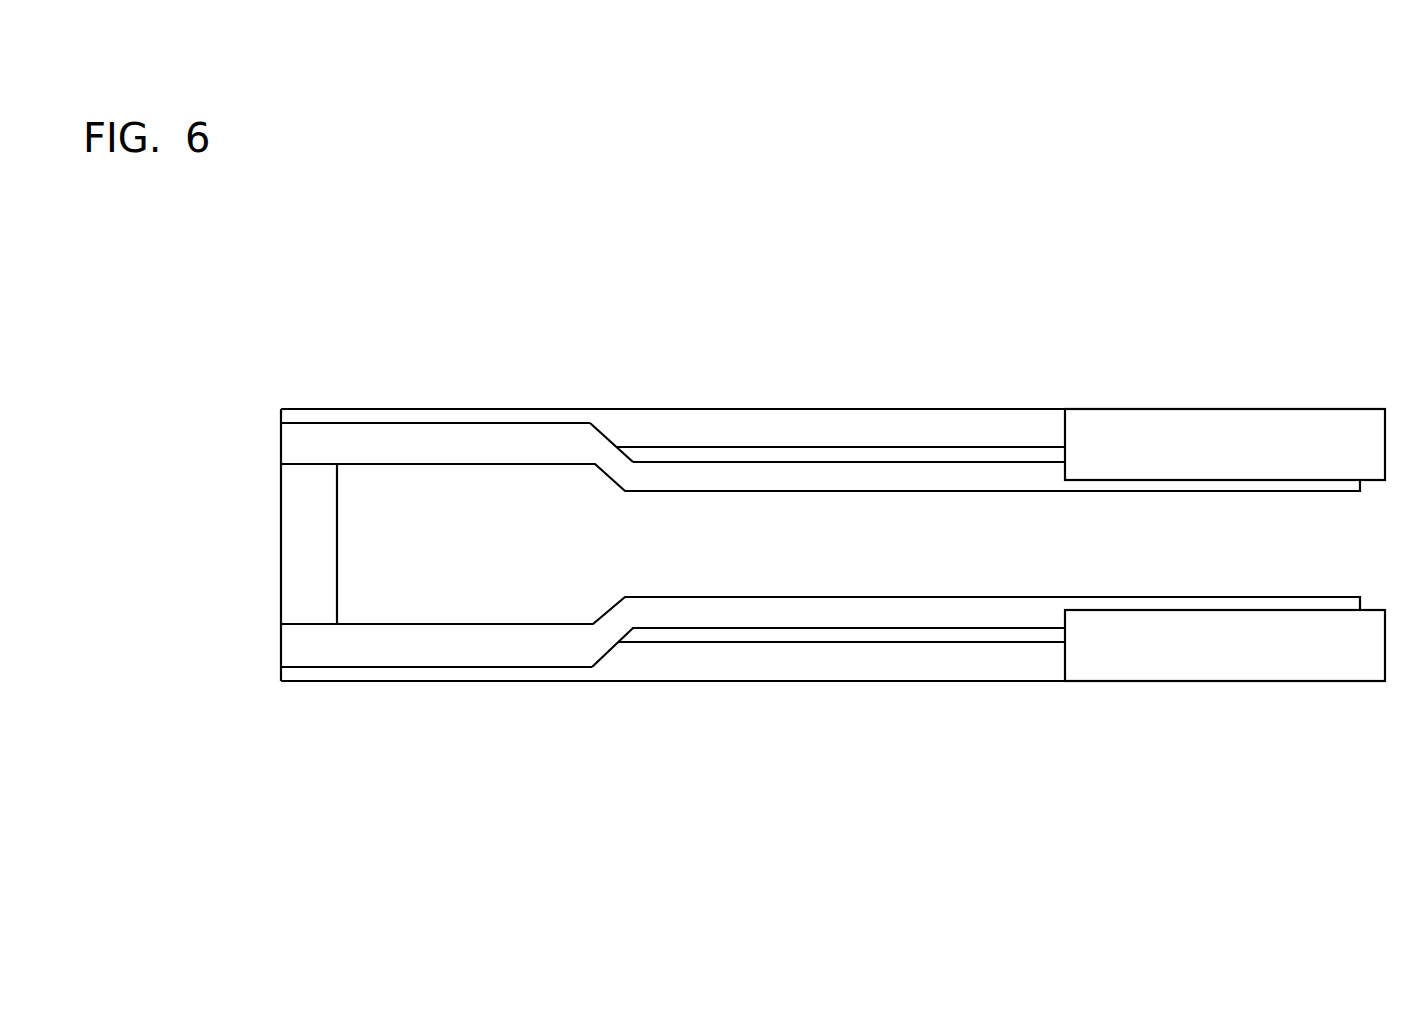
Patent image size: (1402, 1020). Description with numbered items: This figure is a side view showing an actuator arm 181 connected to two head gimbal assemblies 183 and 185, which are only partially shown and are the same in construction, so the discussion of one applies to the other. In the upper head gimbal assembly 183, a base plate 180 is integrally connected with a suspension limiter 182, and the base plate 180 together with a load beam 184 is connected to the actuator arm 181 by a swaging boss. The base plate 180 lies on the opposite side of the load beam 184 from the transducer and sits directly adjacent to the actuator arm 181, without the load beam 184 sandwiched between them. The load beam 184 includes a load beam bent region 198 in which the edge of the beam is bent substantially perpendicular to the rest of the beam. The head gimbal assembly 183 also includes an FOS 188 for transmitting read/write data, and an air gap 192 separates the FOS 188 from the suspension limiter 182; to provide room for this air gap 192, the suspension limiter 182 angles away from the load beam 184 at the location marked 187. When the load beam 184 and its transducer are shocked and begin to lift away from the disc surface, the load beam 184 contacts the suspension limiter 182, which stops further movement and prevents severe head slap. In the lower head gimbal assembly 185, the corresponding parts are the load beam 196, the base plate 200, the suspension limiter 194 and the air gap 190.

The base plate 180 is at (318, 443).
The actuator arm 181 is at (325, 566).
The suspension limiter 182 is at (954, 469).
The head gimbal assembly 183 is at (460, 467).
The load beam 184 is at (440, 412).
The head gimbal assembly 185 is at (479, 621).
The location 187 is at (613, 455).
The FOS 188 is at (740, 440).
The air gap 190 is at (839, 621).
The air gap 192 is at (842, 449).
The suspension limiter 194 is at (710, 611).
The load beam 196 is at (698, 675).
The load beam bent region 198 is at (1210, 448).
The base plate 200 is at (298, 643).